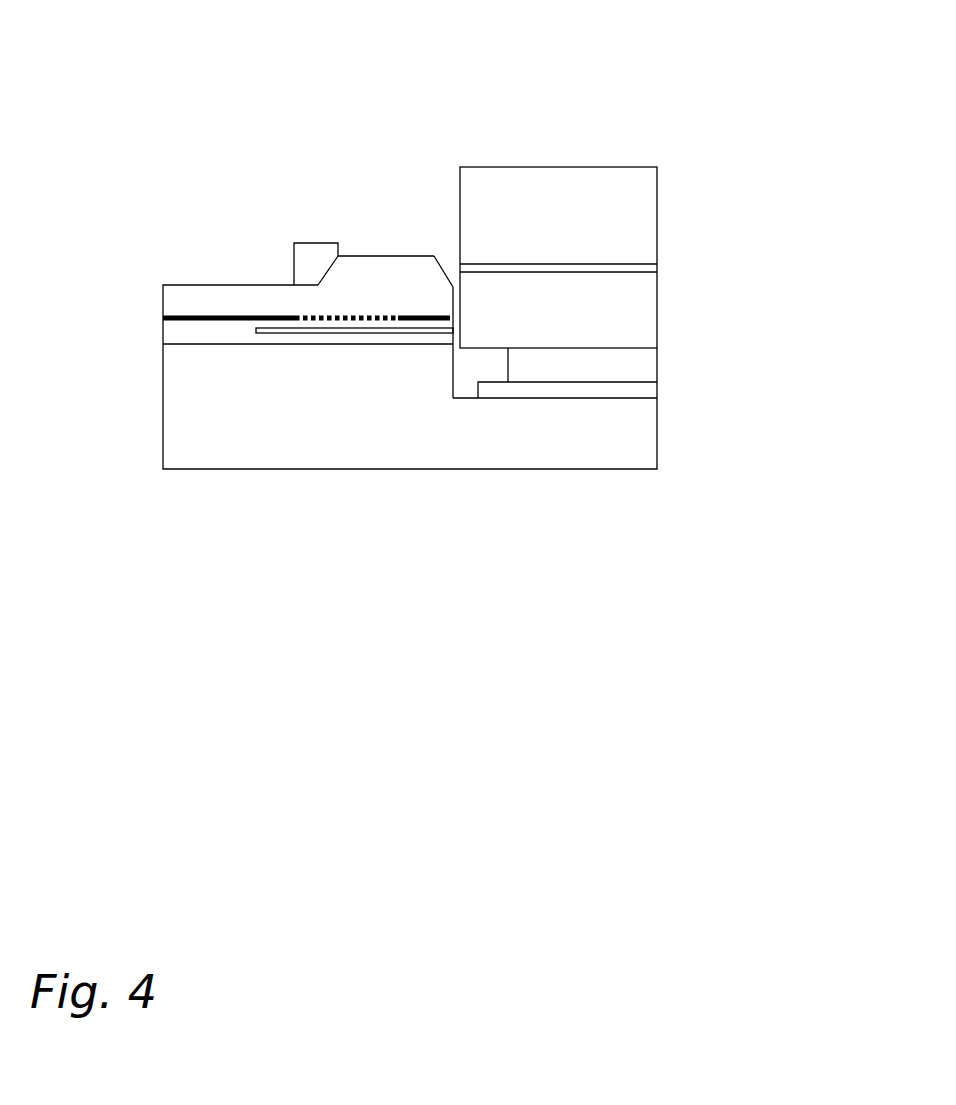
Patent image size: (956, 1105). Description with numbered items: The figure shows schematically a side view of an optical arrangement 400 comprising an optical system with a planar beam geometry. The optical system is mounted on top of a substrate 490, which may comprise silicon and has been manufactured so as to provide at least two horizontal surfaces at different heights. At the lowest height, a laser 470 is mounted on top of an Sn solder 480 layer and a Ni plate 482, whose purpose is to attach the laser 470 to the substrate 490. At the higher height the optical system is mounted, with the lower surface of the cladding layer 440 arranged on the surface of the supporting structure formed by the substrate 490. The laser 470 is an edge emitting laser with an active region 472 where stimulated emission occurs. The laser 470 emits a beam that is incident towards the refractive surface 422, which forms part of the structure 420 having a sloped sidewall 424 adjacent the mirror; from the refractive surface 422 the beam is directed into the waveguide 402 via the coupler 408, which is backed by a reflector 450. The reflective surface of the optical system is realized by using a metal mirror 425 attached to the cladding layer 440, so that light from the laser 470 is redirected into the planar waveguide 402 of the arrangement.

The optical arrangement 400 is at (211, 105).
The waveguide 402 is at (212, 317).
The coupler 408 is at (335, 317).
The cladding structure 420 is at (385, 238).
The refractive surface 422 is at (443, 270).
The sloped sidewall 424 is at (323, 277).
The metal mirror 425 is at (309, 243).
The cladding layer 440 is at (202, 335).
The reflector 450 is at (317, 330).
The laser 470 is at (570, 167).
The active region 472 is at (470, 272).
The Sn solder layer 480 is at (658, 363).
The Ni plate 482 is at (658, 394).
The substrate 490 is at (658, 437).